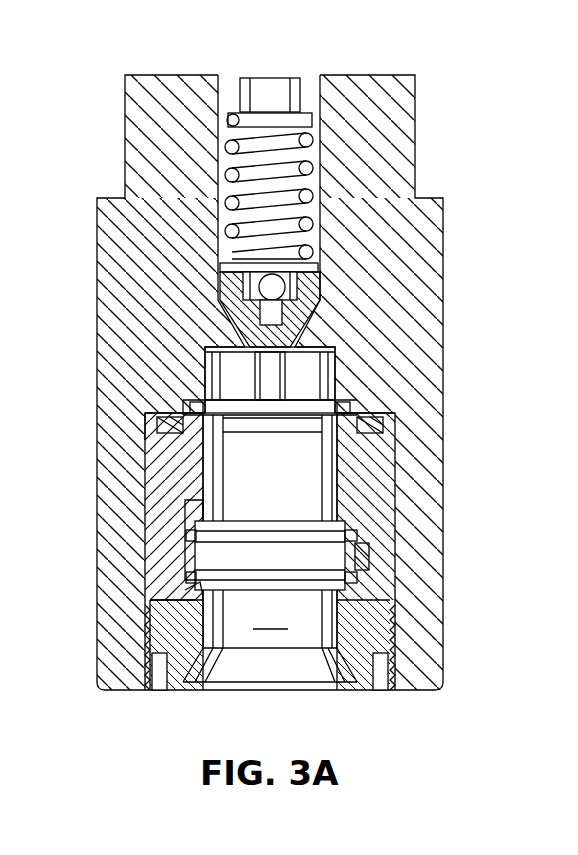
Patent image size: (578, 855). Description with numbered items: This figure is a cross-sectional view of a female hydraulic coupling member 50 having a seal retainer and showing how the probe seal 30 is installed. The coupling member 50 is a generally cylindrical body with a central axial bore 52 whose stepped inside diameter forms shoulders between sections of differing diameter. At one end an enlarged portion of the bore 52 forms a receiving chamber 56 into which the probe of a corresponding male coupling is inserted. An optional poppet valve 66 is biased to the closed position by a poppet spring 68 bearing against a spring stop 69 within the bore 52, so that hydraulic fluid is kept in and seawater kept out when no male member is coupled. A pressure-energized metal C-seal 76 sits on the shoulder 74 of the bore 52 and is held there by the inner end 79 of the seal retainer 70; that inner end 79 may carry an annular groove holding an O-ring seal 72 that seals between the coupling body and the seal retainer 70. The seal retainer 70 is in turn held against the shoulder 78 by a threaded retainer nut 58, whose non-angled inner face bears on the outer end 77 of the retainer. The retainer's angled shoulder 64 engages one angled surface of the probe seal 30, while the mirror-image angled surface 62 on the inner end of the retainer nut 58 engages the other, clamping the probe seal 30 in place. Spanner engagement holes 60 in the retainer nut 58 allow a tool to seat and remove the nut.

The female hydraulic coupling member 50 is at (93, 124).
The central axial bore 52 is at (312, 157).
The spring stop 69 is at (310, 85).
The poppet spring 68 is at (235, 174).
The poppet valve 66 is at (330, 343).
The shoulder 74 is at (340, 400).
The O-ring seal 72 is at (355, 425).
The inner end of seal retainer 79 is at (385, 412).
The seal retainer 70 is at (385, 485).
The receiving chamber 56 is at (270, 548).
The angled shoulder 64 is at (185, 515).
The probe seal 30 is at (360, 558).
The outer end of seal retainer 77 is at (180, 578).
The angled surface 62 is at (172, 595).
The retainer nut 58 is at (385, 632).
The spanner engagement holes 60 is at (162, 680).
The pressure-energized metal C-seal 76 is at (196, 404).
The shoulder 78 is at (148, 432).